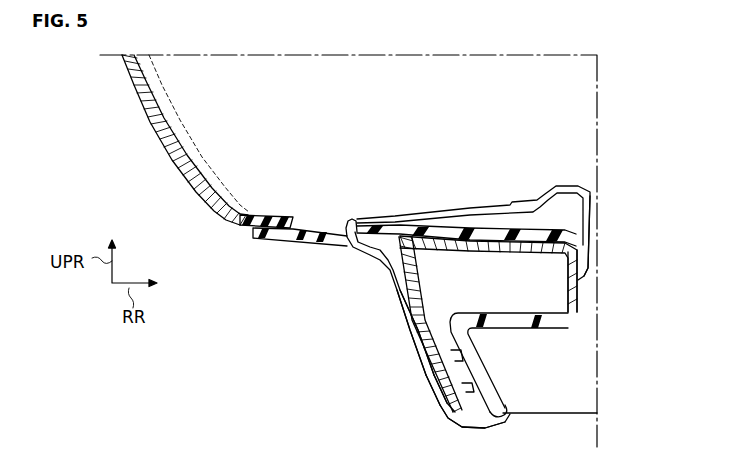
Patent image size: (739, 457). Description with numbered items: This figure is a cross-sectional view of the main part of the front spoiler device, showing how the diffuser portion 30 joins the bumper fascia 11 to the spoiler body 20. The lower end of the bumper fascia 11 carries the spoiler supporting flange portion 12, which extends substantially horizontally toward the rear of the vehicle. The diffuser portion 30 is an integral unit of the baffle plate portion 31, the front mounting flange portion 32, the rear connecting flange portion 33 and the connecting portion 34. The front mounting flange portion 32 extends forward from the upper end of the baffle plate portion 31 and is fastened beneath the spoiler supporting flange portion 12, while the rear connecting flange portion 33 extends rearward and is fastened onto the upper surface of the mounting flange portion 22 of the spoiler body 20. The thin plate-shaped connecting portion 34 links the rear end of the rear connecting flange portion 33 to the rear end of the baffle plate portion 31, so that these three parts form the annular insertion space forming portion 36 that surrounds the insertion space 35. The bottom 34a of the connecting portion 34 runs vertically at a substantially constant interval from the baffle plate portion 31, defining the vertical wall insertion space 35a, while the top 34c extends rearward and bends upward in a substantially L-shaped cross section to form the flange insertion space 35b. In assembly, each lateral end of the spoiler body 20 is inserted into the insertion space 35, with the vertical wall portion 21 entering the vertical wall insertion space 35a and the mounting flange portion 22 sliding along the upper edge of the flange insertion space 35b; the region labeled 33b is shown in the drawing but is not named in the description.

The bumper fascia 11 is at (175, 156).
The spoiler supporting flange portion 12 is at (260, 214).
The front mounting flange portion 32 is at (278, 244).
The mounting flange portion 22 is at (500, 248).
The rear connecting flange portion 33 is at (538, 233).
The flange insertion space 35b is at (579, 248).
The insertion space forming portion 36 is at (587, 267).
The insertion space 35 is at (462, 300).
The connecting portion 34 is at (582, 310).
The top of the connecting portion 34c is at (581, 284).
The vertical wall insertion space 35a is at (462, 372).
The bottom of the connecting portion 34a is at (497, 399).
The spoiler body 20 is at (392, 296).
The vertical wall portion 21 is at (398, 322).
The diffuser portion 30 is at (411, 355).
The front wall lower portion 33b is at (420, 380).
The baffle plate portion 31 is at (423, 397).